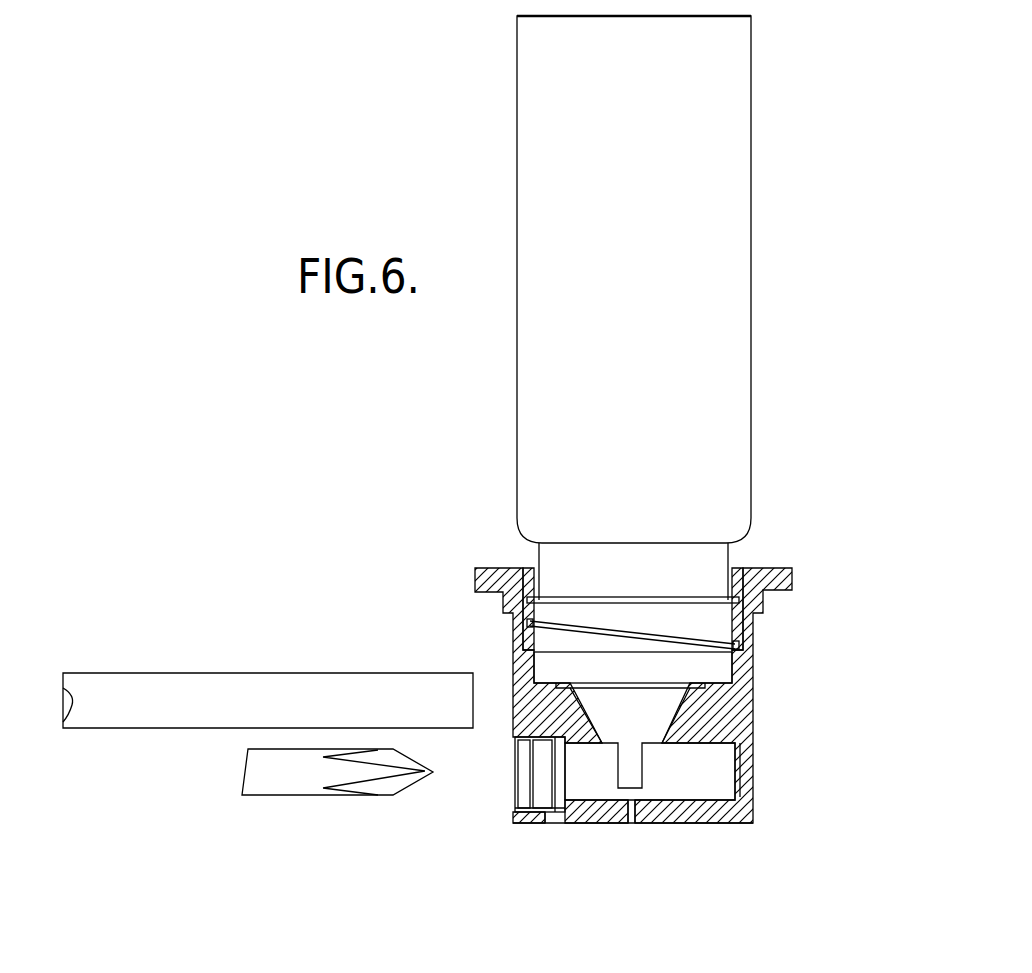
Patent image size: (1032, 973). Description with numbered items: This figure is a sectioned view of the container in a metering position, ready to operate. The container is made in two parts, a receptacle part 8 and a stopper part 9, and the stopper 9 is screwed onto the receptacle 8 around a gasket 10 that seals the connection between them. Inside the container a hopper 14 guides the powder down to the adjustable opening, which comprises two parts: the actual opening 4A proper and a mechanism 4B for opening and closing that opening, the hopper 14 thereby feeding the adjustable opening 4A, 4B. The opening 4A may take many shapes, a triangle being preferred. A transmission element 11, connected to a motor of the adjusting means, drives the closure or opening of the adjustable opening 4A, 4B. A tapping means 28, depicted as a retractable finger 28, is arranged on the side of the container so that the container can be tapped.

The receptacle part 8 is at (640, 242).
The stopper part 9 is at (515, 665).
The gasket 10 is at (680, 665).
The hopper 14 is at (640, 707).
The mechanism for opening and closing the opening 4B is at (685, 768).
The opening 4A is at (750, 806).
The tapping means 28 is at (283, 683).
The transmission element 11 is at (290, 758).